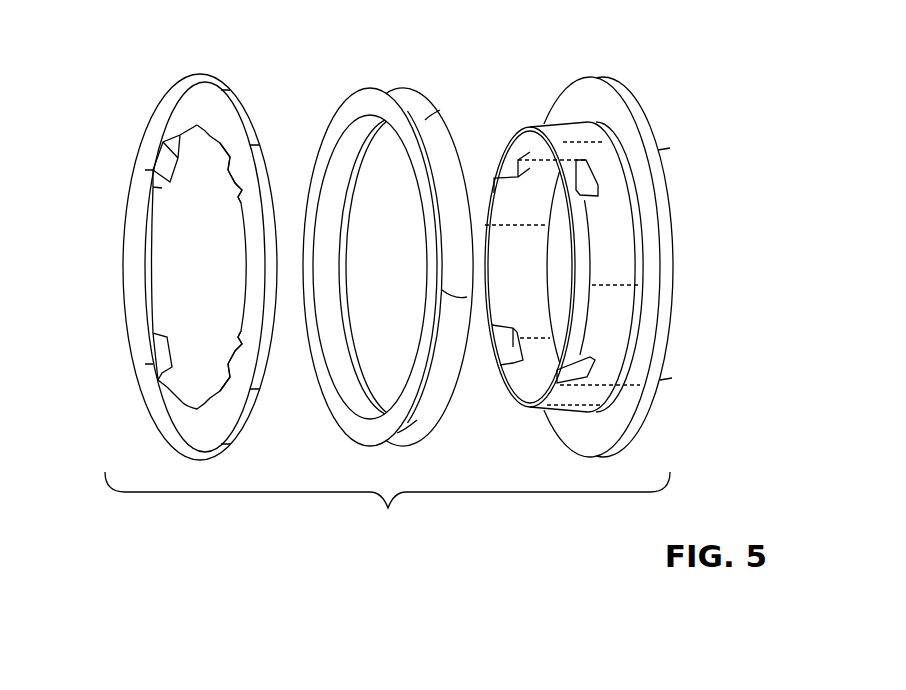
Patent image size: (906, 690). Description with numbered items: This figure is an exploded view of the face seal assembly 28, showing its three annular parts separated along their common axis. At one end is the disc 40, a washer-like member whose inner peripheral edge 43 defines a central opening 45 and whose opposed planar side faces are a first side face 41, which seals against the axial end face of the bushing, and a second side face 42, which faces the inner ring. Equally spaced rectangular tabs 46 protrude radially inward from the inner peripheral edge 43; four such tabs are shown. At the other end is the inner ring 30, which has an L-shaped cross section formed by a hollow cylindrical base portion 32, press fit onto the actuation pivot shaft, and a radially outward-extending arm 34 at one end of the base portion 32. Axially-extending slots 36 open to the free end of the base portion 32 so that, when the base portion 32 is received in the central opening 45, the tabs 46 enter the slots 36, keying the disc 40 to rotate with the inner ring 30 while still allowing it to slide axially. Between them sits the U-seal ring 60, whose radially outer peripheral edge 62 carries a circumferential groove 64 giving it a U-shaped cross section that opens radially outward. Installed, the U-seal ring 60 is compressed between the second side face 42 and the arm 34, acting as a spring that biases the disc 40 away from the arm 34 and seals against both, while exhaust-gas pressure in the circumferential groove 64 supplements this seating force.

The face seal assembly 28 is at (387, 505).
The inner ring 30 is at (663, 116).
The hollow cylindrical base portion 32 is at (622, 255).
The radially outward-extending arm 34 is at (648, 365).
The axially-extending slots 36 is at (510, 167).
The disc 40 is at (256, 91).
The first side face 41 is at (230, 403).
The second side face 42 is at (258, 397).
The inner peripheral edge 43 is at (147, 278).
The central opening 45 is at (172, 238).
The rectangular tabs 46 is at (158, 162).
The U-seal ring 60 is at (456, 107).
The radially outer peripheral edge 62 is at (405, 105).
The circumferential groove 64 is at (442, 385).